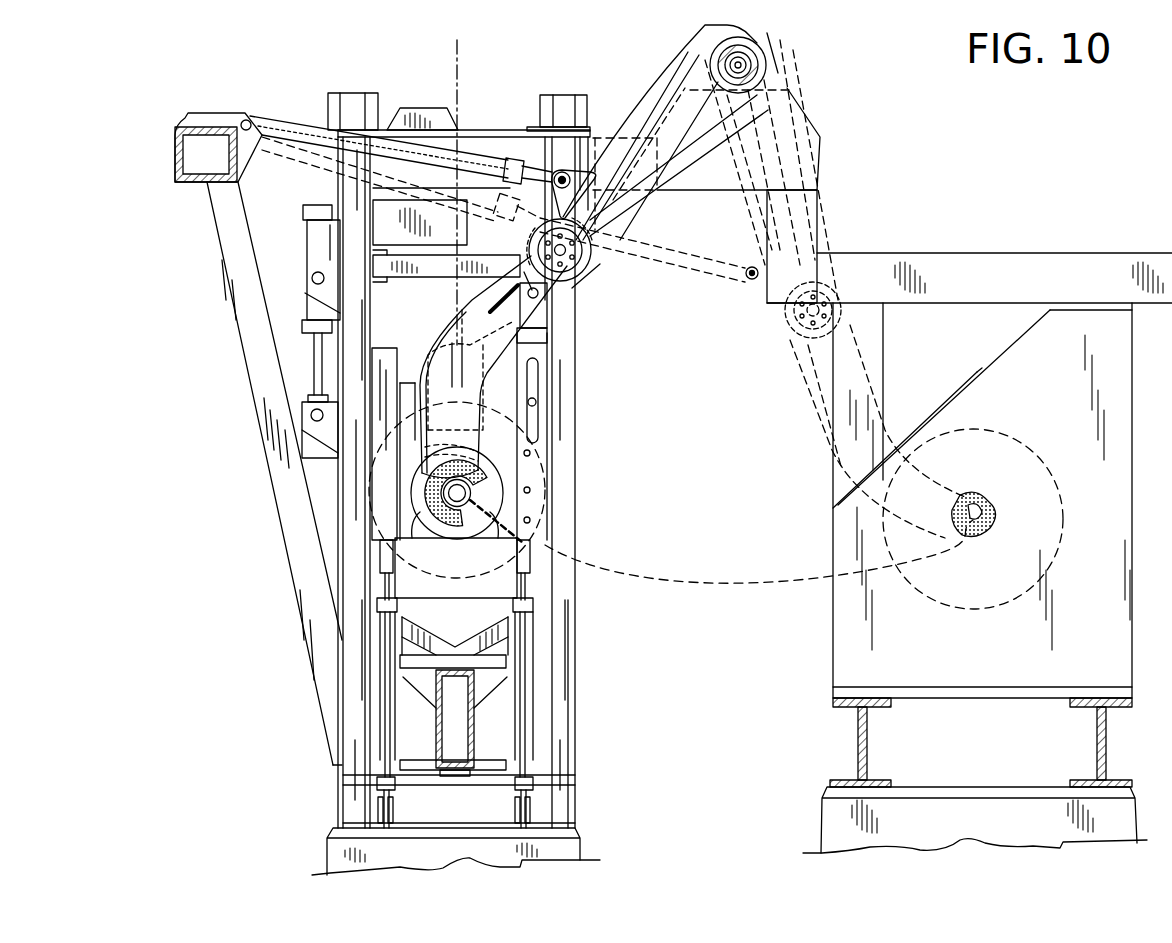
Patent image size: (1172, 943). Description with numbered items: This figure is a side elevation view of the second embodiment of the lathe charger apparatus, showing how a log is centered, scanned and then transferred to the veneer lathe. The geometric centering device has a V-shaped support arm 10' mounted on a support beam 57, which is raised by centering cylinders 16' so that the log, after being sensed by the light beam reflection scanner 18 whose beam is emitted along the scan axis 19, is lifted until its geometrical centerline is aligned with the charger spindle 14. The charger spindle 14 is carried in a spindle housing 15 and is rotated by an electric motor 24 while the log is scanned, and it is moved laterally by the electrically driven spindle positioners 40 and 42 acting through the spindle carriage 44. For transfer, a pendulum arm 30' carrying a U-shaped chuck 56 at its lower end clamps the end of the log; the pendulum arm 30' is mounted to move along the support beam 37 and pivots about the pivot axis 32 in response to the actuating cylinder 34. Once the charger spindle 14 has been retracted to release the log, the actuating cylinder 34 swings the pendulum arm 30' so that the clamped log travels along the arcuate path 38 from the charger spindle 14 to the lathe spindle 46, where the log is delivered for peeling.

The actuating cylinder 34 is at (300, 118).
The scan axis 19 is at (460, 77).
The pivot axis 32 is at (745, 62).
The spindle positioner 42 is at (313, 237).
The light beam reflection scanner 18 is at (465, 215).
The electric motor 24 is at (455, 300).
The support beam 37 is at (585, 270).
The spindle positioner 40 is at (542, 330).
The pendulum arm 30' is at (692, 281).
The U-shaped chuck 56 is at (474, 474).
The charger spindle 14 is at (466, 498).
The spindle housing 15 is at (489, 532).
The V-shaped support arm 10' is at (455, 623).
The centering cylinder 16' is at (435, 684).
The support beam 57 is at (467, 733).
The spindle carriage 44 is at (315, 428).
The arcuate path 38 is at (700, 583).
The lathe spindle 46 is at (980, 512).